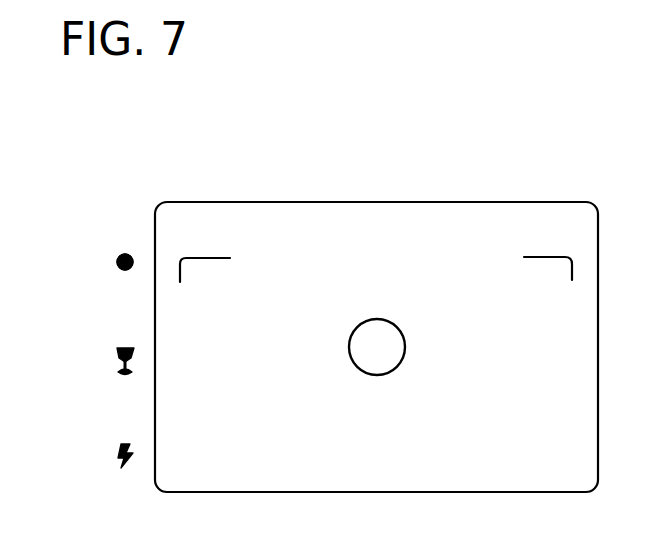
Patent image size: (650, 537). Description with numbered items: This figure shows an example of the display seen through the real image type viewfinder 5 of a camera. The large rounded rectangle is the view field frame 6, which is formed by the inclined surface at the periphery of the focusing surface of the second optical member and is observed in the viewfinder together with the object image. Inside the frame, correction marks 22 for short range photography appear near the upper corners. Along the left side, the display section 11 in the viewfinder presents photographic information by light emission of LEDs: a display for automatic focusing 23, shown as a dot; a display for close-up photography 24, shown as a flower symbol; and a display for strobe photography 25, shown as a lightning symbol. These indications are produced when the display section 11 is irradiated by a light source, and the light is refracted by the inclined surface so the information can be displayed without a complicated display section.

The real image type viewfinder 5 is at (376, 304).
The view field frame 6 is at (335, 202).
The display section in the viewfinder 11 is at (120, 252).
The correction marks 22 is at (543, 257).
The display for automatic focusing 23 is at (117, 262).
The display for close-up photography 24 is at (116, 356).
The display for strobe photography 25 is at (117, 452).